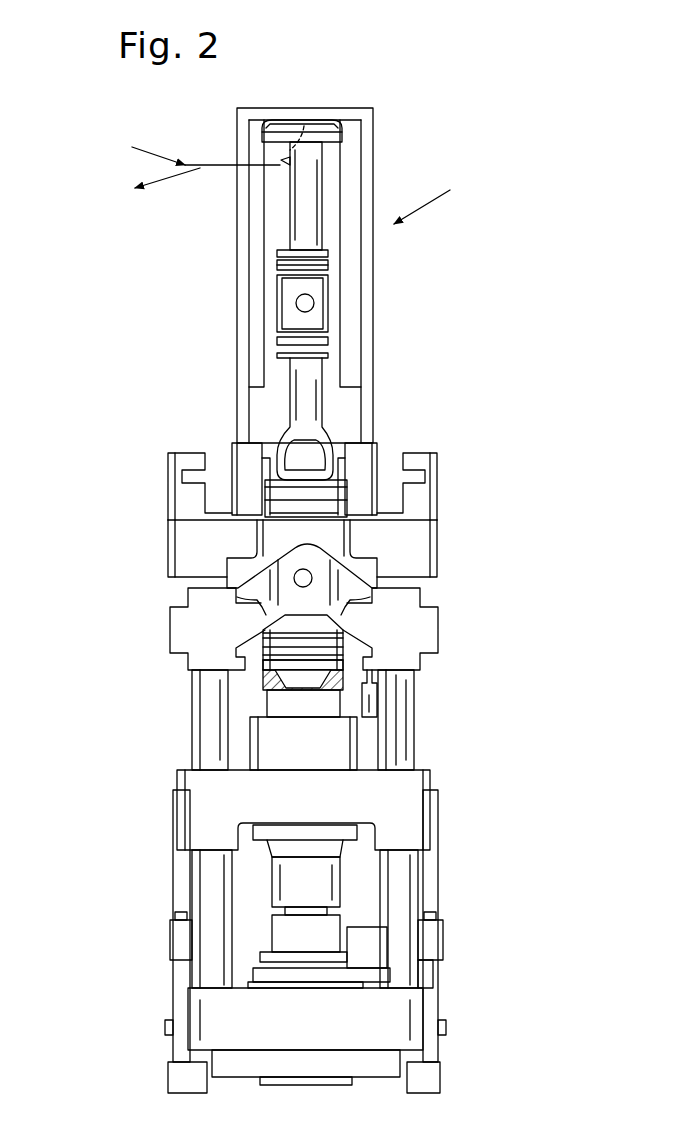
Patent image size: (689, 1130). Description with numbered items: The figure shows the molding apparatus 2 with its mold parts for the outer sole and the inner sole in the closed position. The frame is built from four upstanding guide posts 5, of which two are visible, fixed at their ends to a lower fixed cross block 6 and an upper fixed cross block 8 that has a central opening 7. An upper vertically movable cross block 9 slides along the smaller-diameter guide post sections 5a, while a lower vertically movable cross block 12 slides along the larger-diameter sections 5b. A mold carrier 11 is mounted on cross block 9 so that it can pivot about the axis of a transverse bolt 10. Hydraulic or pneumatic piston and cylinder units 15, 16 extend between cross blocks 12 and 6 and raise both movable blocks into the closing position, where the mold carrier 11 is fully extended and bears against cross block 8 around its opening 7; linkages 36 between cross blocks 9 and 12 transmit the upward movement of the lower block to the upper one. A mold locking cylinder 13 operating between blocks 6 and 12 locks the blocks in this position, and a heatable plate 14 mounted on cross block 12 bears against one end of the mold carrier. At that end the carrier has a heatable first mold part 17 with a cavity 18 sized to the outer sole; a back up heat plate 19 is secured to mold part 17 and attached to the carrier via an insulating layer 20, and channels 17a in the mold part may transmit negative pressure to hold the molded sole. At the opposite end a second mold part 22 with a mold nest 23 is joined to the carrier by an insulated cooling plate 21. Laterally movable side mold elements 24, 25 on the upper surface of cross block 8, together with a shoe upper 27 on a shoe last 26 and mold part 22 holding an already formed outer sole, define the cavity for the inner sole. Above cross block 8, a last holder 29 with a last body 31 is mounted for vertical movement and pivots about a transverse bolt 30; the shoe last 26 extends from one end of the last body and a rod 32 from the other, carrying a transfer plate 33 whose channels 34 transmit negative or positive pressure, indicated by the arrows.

The molding apparatus 2 is at (433, 196).
The guide posts 5 is at (208, 683).
The guide post sections of smaller diameter 5a is at (407, 688).
The guide post sections of larger diameter 5b is at (422, 975).
The lower fixed cross block 6 is at (403, 1007).
The central opening 7 is at (352, 548).
The upper fixed cross block 8 is at (418, 560).
The upper vertically movable cross block 9 is at (395, 623).
The transverse bolt 10 is at (294, 578).
The mold carrier 11 is at (283, 535).
The lower vertically movable cross block 12 is at (388, 803).
The mold locking cylinder 13 is at (325, 878).
The heatable plate 14 is at (300, 712).
The piston and cylinder unit 15 is at (186, 940).
The piston and cylinder unit 16 is at (196, 865).
The first mold part 17 is at (315, 665).
The channels 17a is at (262, 672).
The cavity 18 is at (290, 690).
The back up heat plate 19 is at (258, 650).
The insulating layer 20 is at (285, 637).
The insulated cooling plate 21 is at (323, 506).
The second mold part 22 is at (330, 490).
The mold nest 23 is at (330, 505).
The side mold element 24 is at (352, 460).
The side mold element 25 is at (270, 467).
The shoe last 26 is at (297, 368).
The shoe upper 27 is at (245, 458).
The last holder 29 is at (275, 222).
The transverse bolt 30 is at (306, 304).
The last body 31 is at (315, 283).
The rod 32 is at (312, 190).
The transfer plate 33 is at (342, 133).
The channels 34 is at (305, 127).
The linkages 36 is at (378, 710).